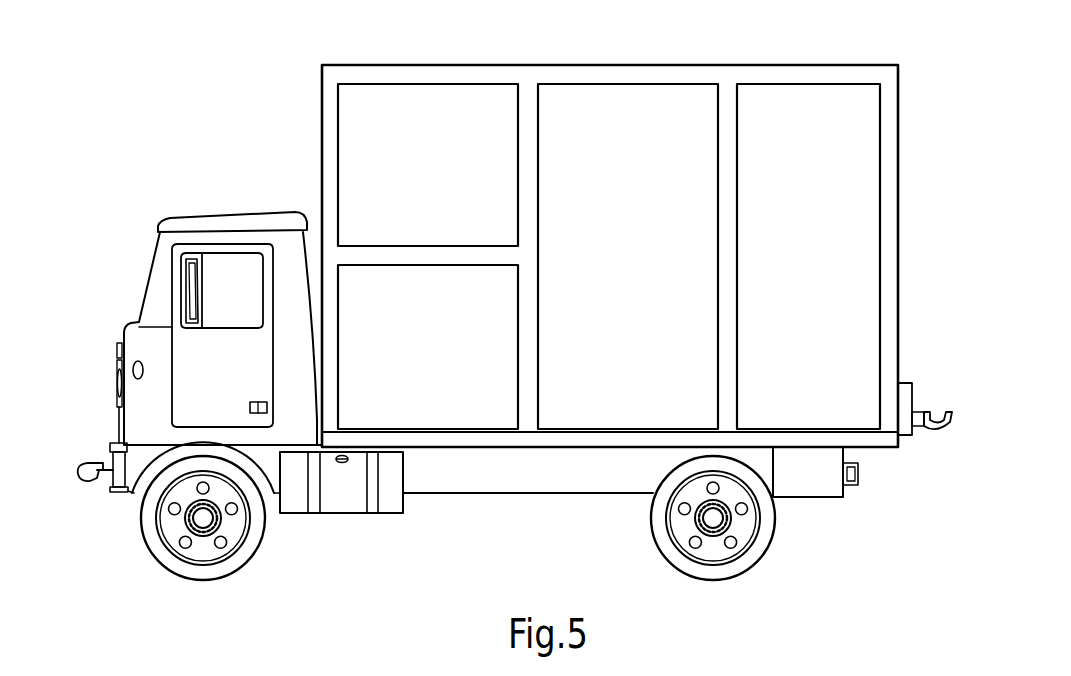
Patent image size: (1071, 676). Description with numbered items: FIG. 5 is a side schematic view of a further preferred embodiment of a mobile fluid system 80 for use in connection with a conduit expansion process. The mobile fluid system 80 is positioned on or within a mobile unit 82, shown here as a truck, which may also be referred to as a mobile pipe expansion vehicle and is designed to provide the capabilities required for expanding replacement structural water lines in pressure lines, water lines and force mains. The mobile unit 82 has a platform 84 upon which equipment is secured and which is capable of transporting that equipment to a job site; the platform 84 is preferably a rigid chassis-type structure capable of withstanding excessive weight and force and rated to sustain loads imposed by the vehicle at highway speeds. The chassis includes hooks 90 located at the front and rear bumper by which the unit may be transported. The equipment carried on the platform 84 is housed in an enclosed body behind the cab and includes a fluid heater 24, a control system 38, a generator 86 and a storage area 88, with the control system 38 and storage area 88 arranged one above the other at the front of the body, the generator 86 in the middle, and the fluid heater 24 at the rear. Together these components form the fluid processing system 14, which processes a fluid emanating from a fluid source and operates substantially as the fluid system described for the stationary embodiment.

The mobile fluid system 80 is at (280, 73).
The fluid processing system 14 is at (803, 74).
The control system 38 is at (338, 128).
The generator 86 is at (559, 82).
The mobile unit 82 is at (643, 65).
The fluid heater 24 is at (807, 428).
The storage area 88 is at (451, 430).
The platform 84 is at (638, 437).
The hooks 90 is at (84, 481).